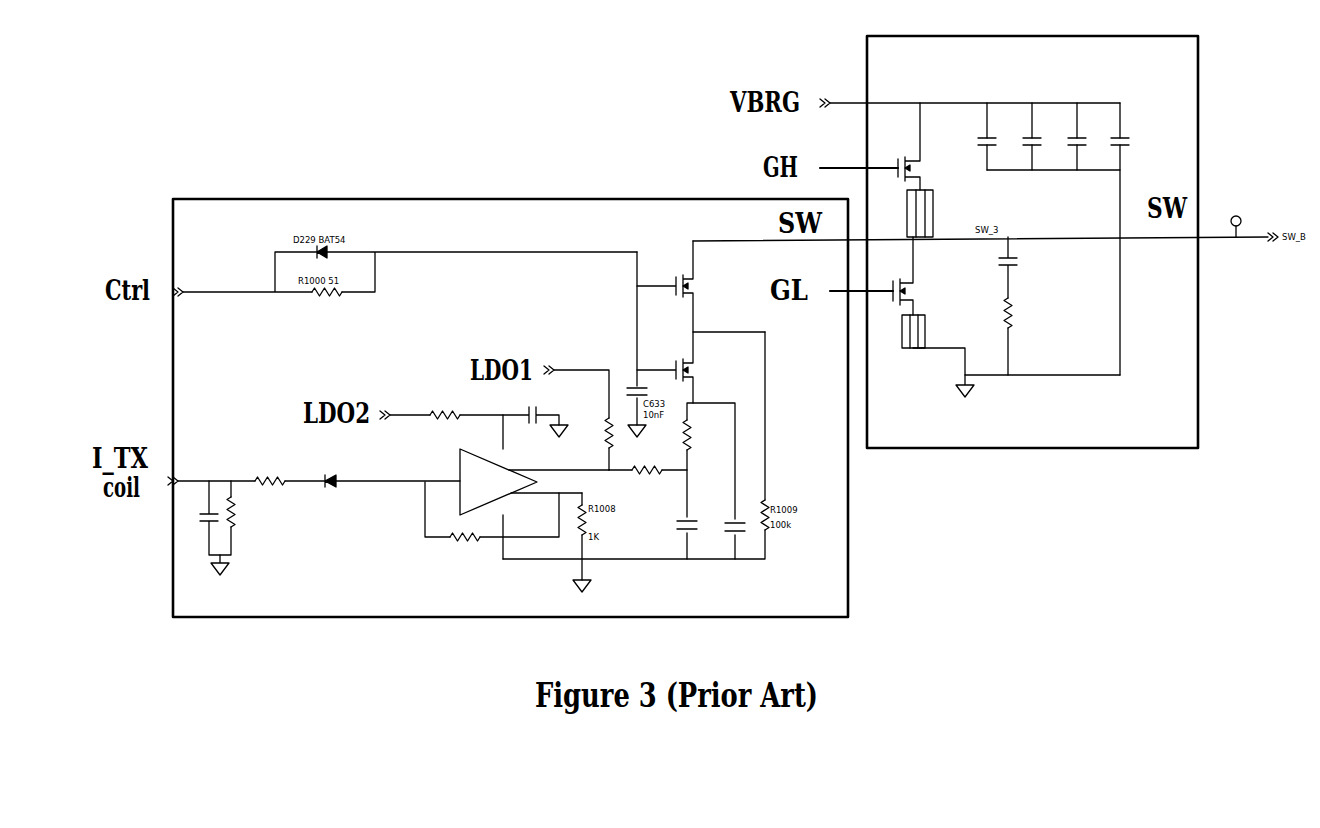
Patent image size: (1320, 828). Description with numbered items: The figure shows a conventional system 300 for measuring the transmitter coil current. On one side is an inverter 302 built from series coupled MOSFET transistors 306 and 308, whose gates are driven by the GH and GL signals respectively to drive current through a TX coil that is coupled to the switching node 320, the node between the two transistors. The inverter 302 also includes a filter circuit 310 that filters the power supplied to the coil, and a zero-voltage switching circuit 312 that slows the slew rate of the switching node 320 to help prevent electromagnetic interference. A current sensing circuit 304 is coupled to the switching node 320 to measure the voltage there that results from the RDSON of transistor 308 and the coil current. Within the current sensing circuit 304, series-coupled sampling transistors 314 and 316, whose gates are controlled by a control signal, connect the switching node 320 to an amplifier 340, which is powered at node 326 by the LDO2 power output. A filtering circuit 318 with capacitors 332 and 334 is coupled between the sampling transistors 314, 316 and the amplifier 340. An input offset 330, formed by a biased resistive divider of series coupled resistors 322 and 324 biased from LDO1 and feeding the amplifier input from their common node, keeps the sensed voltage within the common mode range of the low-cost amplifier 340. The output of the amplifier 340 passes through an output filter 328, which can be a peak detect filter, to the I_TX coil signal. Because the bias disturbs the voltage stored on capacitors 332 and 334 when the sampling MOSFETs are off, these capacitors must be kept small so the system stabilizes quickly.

The conventional system 300 is at (455, 123).
The inverter 302 is at (979, 70).
The current sensing circuit 304 is at (242, 247).
The MOSFET transistor 306 is at (910, 173).
The MOSFET transistor 308 is at (923, 302).
The filter circuit 310 is at (1048, 158).
The zero-voltage switching (ZVS) circuit 312 is at (1030, 298).
The sampling transistor 314 is at (668, 288).
The sampling transistor 316 is at (688, 369).
The filtering circuit 318 is at (717, 448).
The switching node 320 is at (1218, 237).
The resistor 322 is at (610, 445).
The resistor 324 is at (650, 468).
The node 326 is at (502, 415).
The output filter 328 is at (250, 473).
The input offset 330 is at (602, 378).
The capacitor 332 is at (675, 543).
The capacitor 334 is at (728, 537).
The amplifier 340 is at (502, 485).